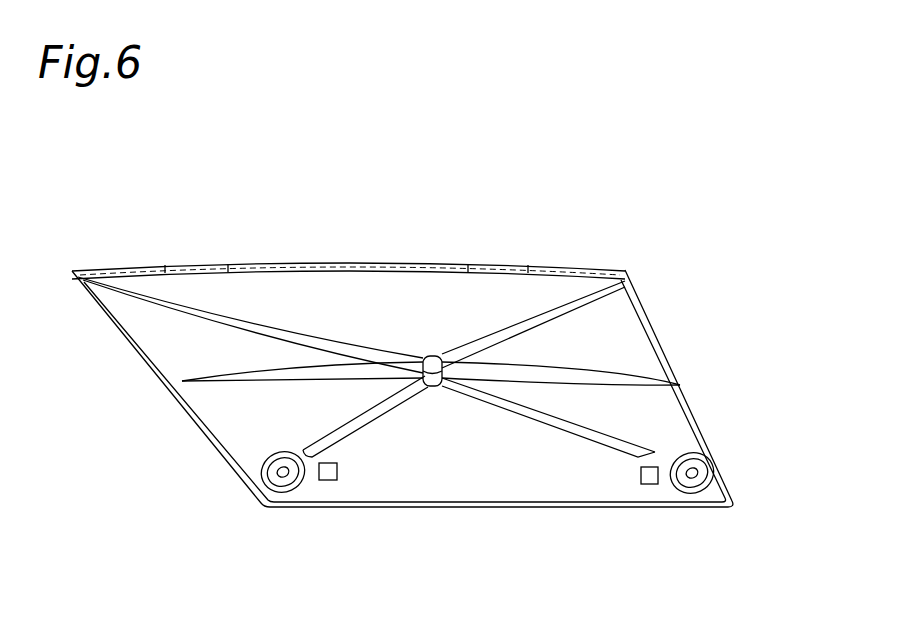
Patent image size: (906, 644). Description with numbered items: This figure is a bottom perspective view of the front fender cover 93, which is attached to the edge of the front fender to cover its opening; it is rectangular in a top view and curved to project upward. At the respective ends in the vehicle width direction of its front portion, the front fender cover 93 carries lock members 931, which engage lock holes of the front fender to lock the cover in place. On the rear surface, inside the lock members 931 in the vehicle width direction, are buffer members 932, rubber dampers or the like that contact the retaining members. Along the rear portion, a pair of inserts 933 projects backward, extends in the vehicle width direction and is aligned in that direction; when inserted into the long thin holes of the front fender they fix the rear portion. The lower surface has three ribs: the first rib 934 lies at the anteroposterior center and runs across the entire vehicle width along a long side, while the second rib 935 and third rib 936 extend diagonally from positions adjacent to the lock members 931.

The front fender cover 93 is at (641, 240).
The lock members 931 is at (290, 492).
The buffer members 932 is at (328, 478).
The inserts 933 is at (193, 264).
The first rib 934 is at (625, 380).
The second rib 935 is at (367, 415).
The third rib 936 is at (580, 425).